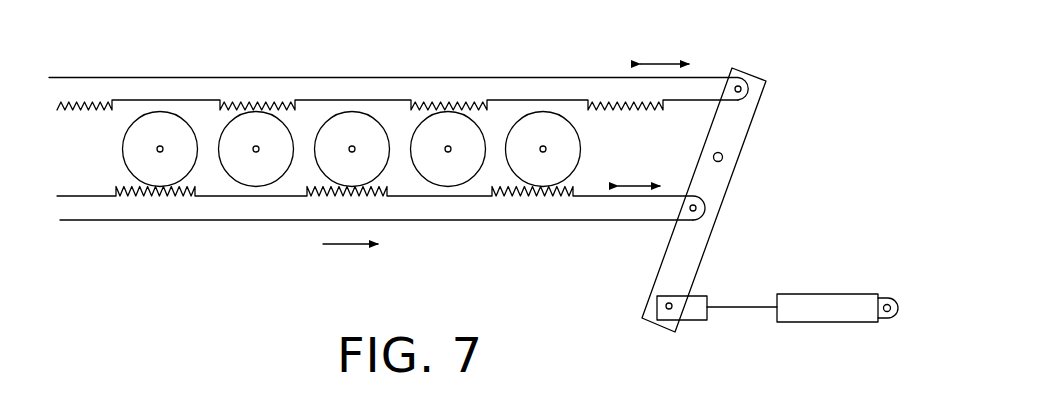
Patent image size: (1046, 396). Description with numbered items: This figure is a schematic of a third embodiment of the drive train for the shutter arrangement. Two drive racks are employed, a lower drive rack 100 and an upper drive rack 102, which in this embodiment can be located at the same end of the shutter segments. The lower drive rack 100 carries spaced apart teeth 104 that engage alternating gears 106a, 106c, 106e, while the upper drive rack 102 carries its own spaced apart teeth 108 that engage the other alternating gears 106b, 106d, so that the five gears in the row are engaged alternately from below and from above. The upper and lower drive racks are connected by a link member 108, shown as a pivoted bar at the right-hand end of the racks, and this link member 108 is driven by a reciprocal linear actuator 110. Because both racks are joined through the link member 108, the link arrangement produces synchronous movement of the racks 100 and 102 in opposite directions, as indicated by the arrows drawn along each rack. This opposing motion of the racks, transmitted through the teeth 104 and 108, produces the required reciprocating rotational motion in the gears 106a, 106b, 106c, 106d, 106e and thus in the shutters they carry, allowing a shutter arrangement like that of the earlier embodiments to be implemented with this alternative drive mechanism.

The lower drive rack 100 is at (158, 222).
The upper drive rack 102 is at (256, 74).
The spaced apart teeth 104 is at (323, 190).
The gear 106a is at (129, 150).
The gear 106b is at (222, 132).
The gear 106c is at (385, 170).
The gear 106d is at (413, 132).
The gear 106e is at (573, 170).
The link member 108 is at (485, 112).
The reciprocal linear actuator 110 is at (782, 293).